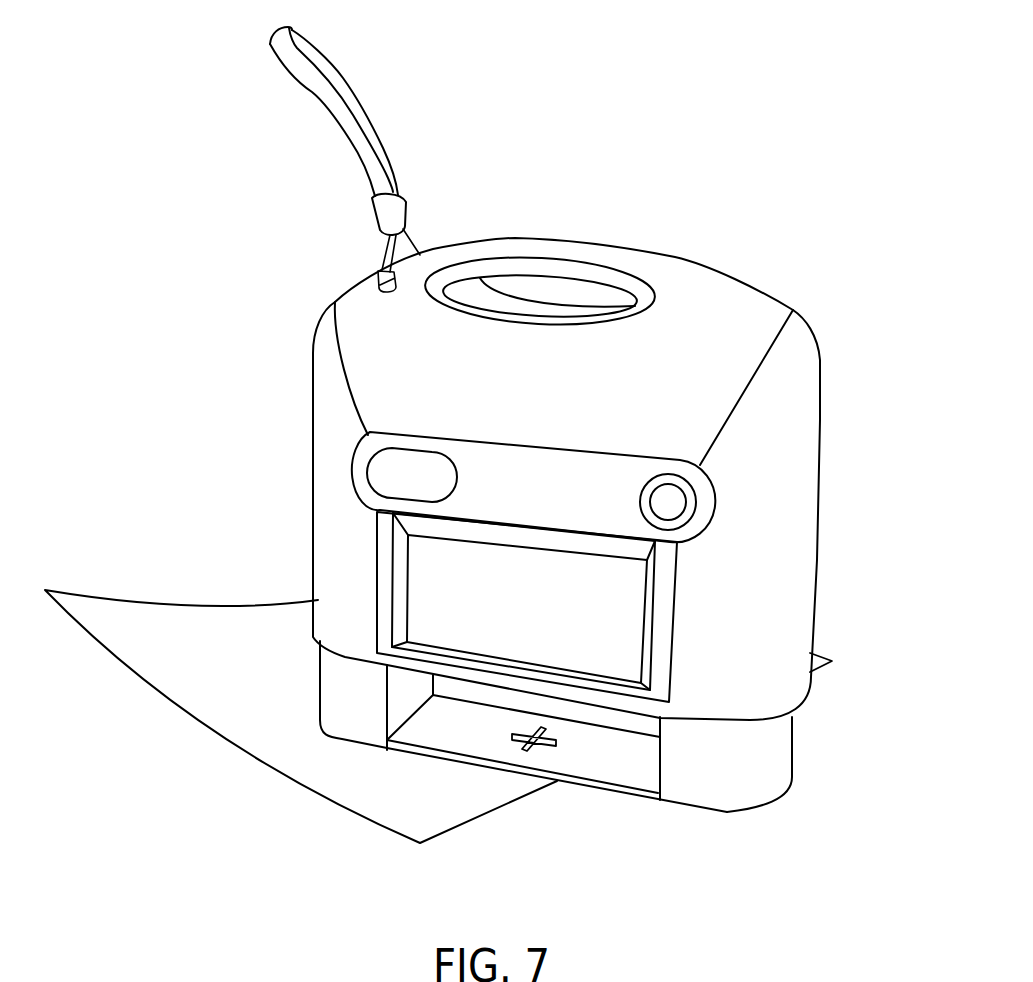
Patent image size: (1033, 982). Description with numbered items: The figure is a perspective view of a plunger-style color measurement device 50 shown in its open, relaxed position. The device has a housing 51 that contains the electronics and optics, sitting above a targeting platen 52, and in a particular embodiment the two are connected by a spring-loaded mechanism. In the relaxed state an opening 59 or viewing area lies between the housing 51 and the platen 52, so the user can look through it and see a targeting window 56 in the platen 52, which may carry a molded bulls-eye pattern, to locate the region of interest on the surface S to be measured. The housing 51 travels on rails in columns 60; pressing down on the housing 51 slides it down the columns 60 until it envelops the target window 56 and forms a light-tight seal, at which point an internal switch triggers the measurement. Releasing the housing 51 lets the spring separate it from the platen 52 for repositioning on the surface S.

The portable printer device 50 is at (528, 443).
The housing 51 is at (698, 315).
The targeting platen 52 is at (577, 783).
The targeting window 56 is at (528, 750).
The opening 59 is at (622, 762).
The columns 60 is at (514, 750).
The surface S is at (332, 792).